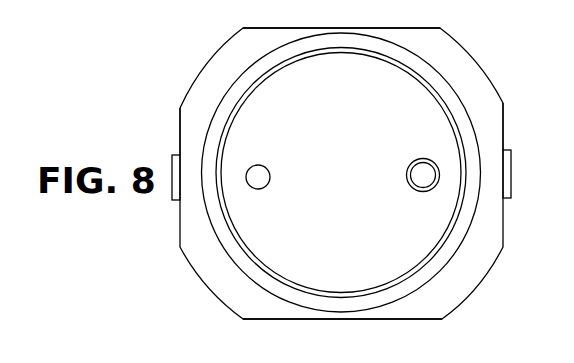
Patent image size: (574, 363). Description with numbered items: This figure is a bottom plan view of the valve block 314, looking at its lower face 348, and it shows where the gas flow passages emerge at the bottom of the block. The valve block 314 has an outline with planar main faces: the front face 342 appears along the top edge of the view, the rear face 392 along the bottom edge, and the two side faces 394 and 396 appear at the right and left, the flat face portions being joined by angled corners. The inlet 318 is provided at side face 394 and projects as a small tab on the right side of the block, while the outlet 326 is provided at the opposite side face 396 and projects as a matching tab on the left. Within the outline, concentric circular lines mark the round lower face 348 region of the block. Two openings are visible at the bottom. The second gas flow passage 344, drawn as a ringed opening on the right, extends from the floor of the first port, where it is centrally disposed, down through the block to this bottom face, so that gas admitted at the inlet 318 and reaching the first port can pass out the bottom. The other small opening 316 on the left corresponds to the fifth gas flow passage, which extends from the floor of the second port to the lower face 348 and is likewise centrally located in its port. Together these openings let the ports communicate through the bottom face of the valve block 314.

The valve block 314 is at (488, 116).
The front face 342 is at (333, 27).
The lower face 348 is at (453, 57).
The side face 396 is at (178, 128).
The outlet 326 is at (177, 200).
The side face 394 is at (503, 137).
The inlet 318 is at (506, 198).
The bottom flat face 392 is at (305, 320).
The hole 316 is at (258, 189).
The second gas flow passage 344 is at (420, 158).